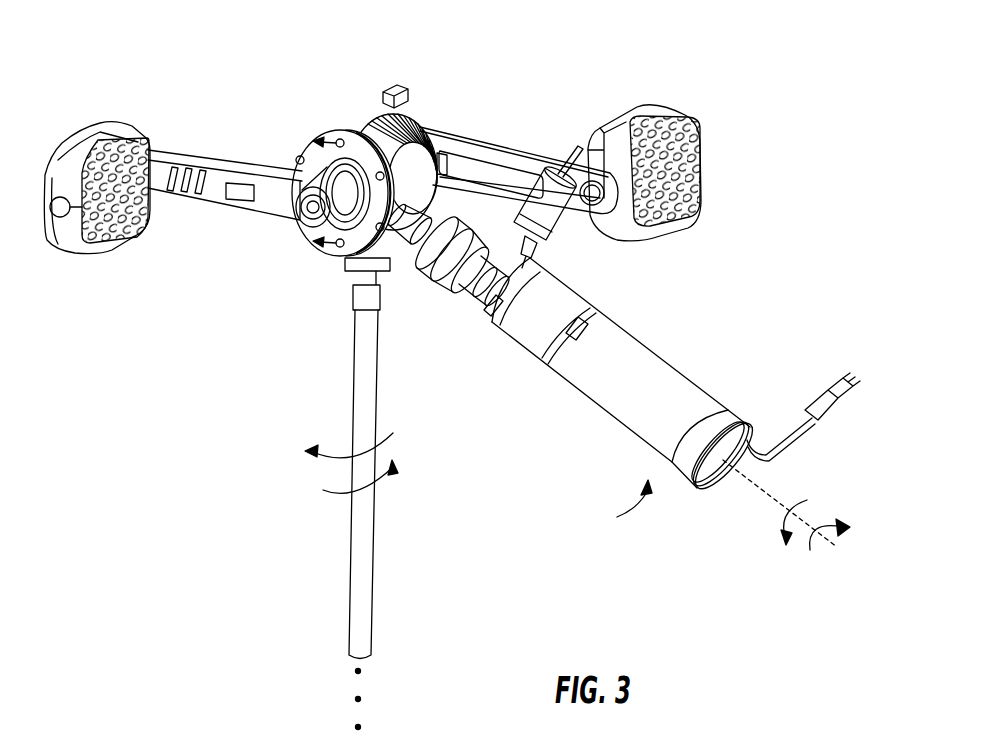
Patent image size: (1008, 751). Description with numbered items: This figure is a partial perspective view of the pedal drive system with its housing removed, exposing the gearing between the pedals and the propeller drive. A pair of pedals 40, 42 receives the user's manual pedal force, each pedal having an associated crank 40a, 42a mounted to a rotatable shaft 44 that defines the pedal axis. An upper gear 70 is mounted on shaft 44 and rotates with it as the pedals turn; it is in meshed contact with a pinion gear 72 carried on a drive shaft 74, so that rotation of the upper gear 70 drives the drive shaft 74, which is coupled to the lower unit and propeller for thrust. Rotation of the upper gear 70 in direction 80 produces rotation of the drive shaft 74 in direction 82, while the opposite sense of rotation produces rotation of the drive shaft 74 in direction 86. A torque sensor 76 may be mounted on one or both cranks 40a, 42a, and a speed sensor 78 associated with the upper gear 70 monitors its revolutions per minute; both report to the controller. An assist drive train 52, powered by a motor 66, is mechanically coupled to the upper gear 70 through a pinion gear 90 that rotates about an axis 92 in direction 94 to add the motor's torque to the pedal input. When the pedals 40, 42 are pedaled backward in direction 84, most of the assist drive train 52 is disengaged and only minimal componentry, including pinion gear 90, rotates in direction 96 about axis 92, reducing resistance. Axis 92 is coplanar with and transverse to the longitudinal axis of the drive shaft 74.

The pedal 40 is at (92, 137).
The crank 40a is at (190, 158).
The pedal 42 is at (672, 115).
The crank 42a is at (490, 149).
The rotatable shaft 44 is at (316, 206).
The assist drive train 52 is at (618, 507).
The motor 66 is at (670, 386).
The upper gear 70 is at (400, 128).
The pinion gear 72 is at (390, 257).
The drive shaft 74 is at (363, 357).
The torque sensor 76 is at (250, 182).
The speed sensor 78 is at (395, 88).
The direction 80 is at (352, 130).
The direction 82 is at (387, 443).
The direction 84 is at (343, 282).
The direction 86 is at (383, 487).
The pinion gear 90 is at (455, 192).
The axis 92 is at (772, 490).
The direction 94 is at (781, 516).
The direction 96 is at (831, 512).